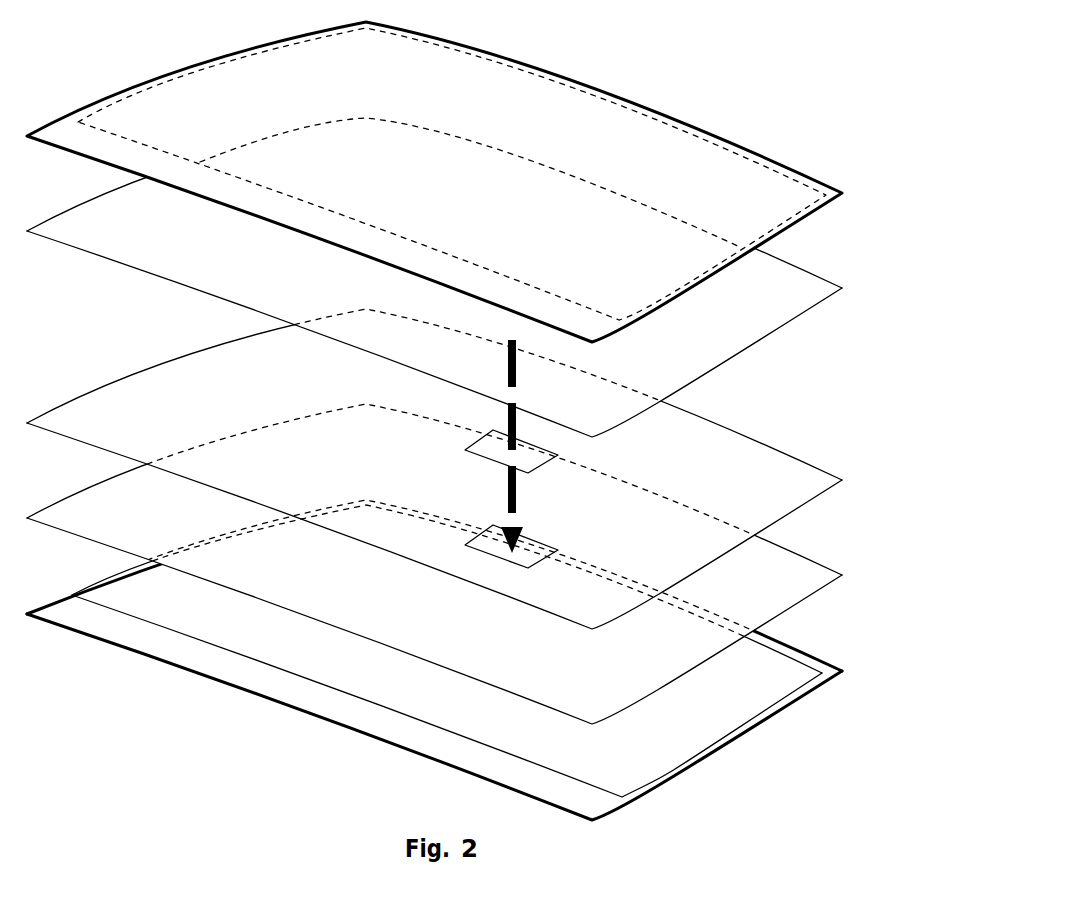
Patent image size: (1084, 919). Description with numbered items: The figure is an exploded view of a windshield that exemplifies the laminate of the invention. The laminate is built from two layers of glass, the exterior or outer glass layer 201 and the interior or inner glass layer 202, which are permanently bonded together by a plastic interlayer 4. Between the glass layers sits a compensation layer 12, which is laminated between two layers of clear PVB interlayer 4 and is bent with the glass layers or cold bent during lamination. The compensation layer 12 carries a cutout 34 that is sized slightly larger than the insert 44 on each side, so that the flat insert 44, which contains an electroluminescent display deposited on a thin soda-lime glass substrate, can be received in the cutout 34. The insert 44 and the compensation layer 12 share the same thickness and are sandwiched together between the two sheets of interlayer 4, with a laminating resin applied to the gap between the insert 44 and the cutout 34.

The outer glass layer 201 is at (705, 128).
The inner glass layer 202 is at (720, 758).
The plastic interlayer 4 is at (817, 280).
The compensation layer 12 is at (738, 430).
The insert 44 is at (466, 446).
The cutout 34 is at (490, 562).